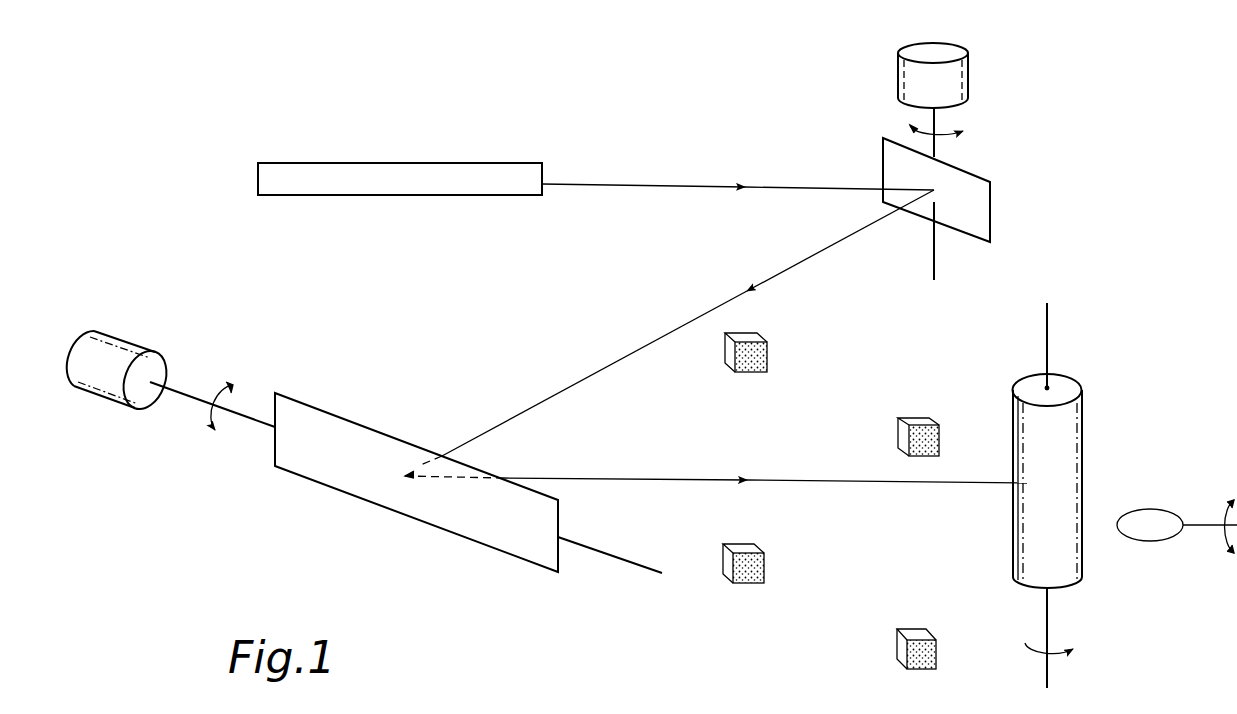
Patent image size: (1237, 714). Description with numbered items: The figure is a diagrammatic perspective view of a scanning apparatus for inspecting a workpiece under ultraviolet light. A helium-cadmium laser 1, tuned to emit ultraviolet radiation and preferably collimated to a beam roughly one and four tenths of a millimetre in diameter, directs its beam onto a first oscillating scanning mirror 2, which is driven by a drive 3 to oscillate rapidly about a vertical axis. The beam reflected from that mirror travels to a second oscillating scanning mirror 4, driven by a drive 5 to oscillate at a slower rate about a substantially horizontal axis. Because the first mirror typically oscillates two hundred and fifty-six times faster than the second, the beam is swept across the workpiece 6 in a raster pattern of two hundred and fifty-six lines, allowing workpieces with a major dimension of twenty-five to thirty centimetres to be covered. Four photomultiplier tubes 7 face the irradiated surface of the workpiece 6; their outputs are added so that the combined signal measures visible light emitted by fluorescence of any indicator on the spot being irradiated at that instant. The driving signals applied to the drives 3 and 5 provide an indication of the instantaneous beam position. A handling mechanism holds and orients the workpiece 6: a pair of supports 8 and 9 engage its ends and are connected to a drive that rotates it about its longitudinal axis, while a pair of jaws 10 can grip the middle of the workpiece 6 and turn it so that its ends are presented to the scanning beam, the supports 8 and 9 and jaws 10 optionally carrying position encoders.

The helium-cadmium laser 1 is at (452, 175).
The first oscillating scanning mirror 2 is at (990, 200).
The drive 3 is at (968, 83).
The second oscillating scanning mirror 4 is at (503, 545).
The drive 5 is at (135, 348).
The workpiece 6 is at (1070, 437).
The photomultiplier tubes 7 is at (755, 338).
The support 8 is at (1050, 347).
The support 9 is at (1050, 621).
The jaws 10 is at (1163, 510).